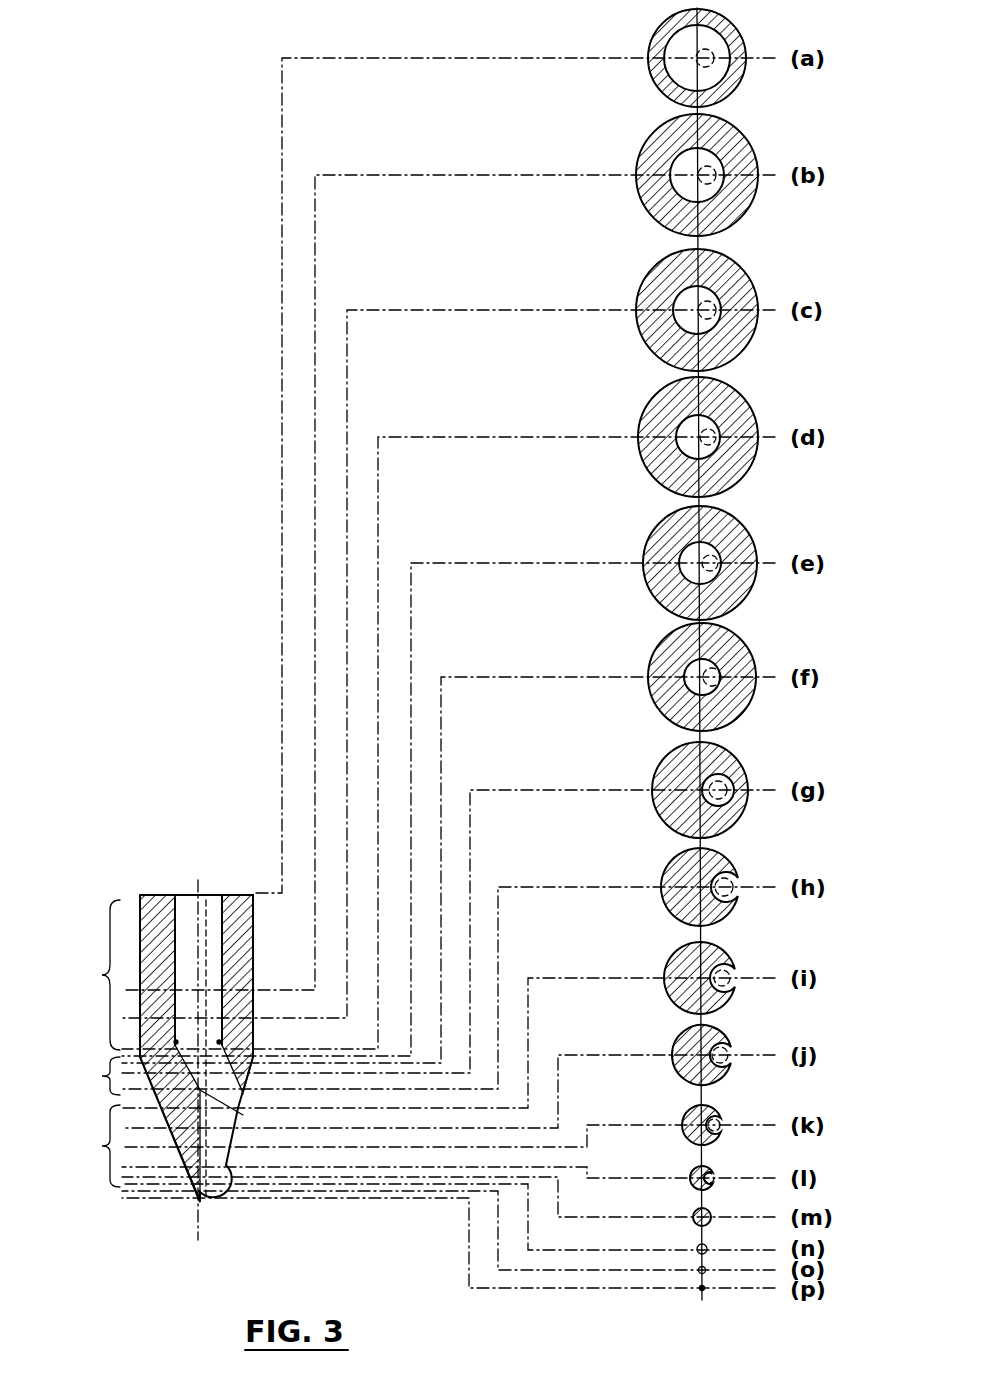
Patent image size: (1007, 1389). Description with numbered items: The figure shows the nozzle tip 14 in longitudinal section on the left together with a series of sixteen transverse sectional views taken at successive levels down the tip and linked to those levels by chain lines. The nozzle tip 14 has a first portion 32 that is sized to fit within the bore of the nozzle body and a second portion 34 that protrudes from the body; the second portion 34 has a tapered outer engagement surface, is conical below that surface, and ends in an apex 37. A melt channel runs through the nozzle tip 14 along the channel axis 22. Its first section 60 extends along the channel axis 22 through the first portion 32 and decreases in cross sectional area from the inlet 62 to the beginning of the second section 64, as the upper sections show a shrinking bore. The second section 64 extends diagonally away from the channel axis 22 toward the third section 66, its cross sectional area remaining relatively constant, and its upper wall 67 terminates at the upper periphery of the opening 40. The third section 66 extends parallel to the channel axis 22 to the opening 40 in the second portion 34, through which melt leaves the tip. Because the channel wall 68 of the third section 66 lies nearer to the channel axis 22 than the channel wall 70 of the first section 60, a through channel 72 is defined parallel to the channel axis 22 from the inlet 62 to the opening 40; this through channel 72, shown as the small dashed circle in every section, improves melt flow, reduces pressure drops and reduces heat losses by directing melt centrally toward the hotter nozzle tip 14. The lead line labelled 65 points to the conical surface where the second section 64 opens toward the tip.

The nozzle tip 14 is at (140, 897).
The channel axis 22 is at (195, 885).
The first portion 32 is at (170, 1047).
The second portion 34 is at (182, 1103).
The apex 37 is at (198, 1204).
The opening 40 is at (232, 1130).
The first section 60 is at (662, 212).
The inlet 62 is at (180, 900).
The second section 64 is at (665, 722).
The conical surface 65 is at (245, 1098).
The third section 66 is at (672, 920).
The upper wall 67 is at (218, 1082).
The channel wall 68 is at (213, 1200).
The channel wall 70 is at (215, 960).
The through channel 72 is at (215, 905).